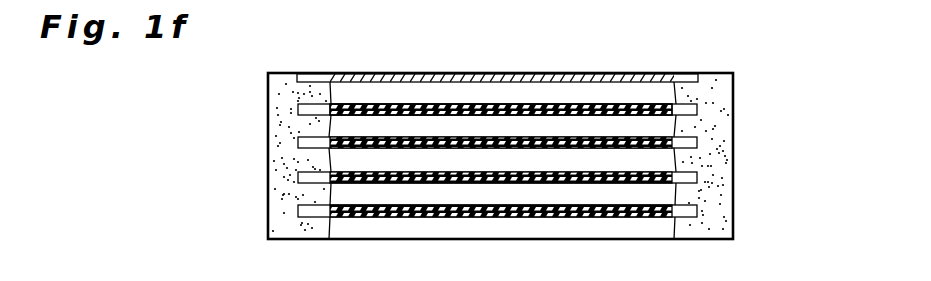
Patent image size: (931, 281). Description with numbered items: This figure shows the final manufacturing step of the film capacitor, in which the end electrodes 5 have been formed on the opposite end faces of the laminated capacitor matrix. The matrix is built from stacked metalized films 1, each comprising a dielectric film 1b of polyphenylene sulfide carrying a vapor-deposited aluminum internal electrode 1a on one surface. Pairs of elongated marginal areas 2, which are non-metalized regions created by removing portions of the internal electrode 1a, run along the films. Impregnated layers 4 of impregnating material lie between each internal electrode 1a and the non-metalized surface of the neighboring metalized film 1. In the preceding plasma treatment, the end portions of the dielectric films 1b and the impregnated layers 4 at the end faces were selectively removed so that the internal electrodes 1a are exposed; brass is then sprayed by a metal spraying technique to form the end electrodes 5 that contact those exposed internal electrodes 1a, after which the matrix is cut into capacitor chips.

The metalized film 1 is at (417, 139).
The internal electrode 1a is at (325, 108).
The dielectric film 1b is at (327, 167).
The marginal areas 2 is at (362, 72).
The impregnated layers 4 is at (580, 103).
The end electrodes 5 is at (720, 126).